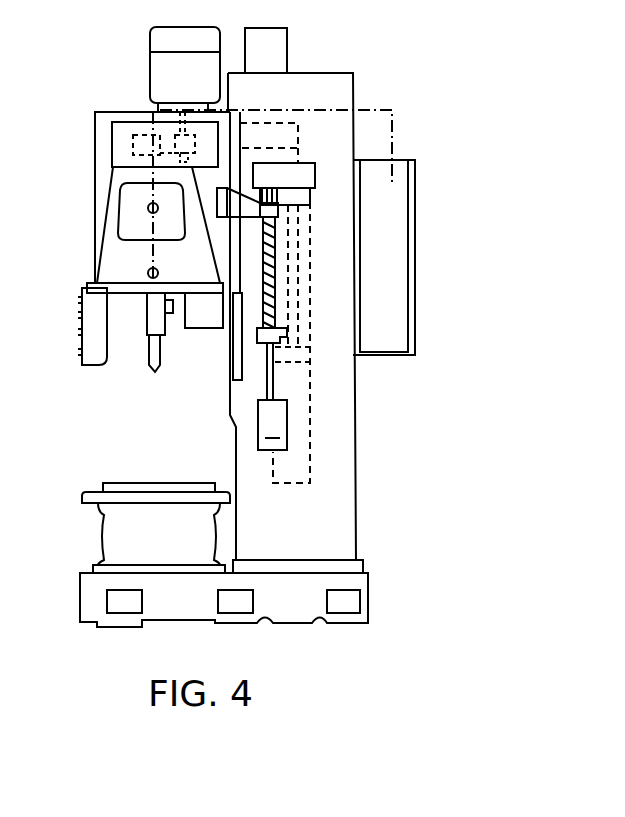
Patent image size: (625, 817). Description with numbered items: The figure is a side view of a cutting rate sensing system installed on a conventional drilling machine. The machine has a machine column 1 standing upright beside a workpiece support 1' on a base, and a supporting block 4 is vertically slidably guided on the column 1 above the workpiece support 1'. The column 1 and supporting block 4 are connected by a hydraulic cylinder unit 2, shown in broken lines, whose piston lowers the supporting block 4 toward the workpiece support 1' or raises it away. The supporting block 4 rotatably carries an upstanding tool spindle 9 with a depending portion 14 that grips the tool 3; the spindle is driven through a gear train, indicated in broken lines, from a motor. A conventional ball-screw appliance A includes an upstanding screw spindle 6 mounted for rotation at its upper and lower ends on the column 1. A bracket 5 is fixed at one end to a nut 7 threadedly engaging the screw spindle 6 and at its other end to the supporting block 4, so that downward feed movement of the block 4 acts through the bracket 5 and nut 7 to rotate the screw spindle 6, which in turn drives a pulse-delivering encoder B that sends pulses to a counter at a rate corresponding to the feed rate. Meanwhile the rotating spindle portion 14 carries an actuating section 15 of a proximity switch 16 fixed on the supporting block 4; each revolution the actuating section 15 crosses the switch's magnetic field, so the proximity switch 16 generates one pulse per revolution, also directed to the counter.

The machine column 1 is at (251, 327).
The workpiece support 1' is at (137, 528).
The hydraulic cylinder unit 2 is at (310, 393).
The tool 3 is at (148, 358).
The supporting block 4 is at (103, 262).
The bracket 5 is at (262, 188).
The screw spindle 6 is at (242, 337).
The nut 7 is at (278, 210).
The tool spindle 9 is at (150, 165).
The depending portion of tool spindle 14 is at (153, 312).
The actuating section 15 is at (169, 314).
The proximity switch 16 is at (218, 324).
The ball-screw appliance A is at (250, 235).
The sensor B is at (82, 330).